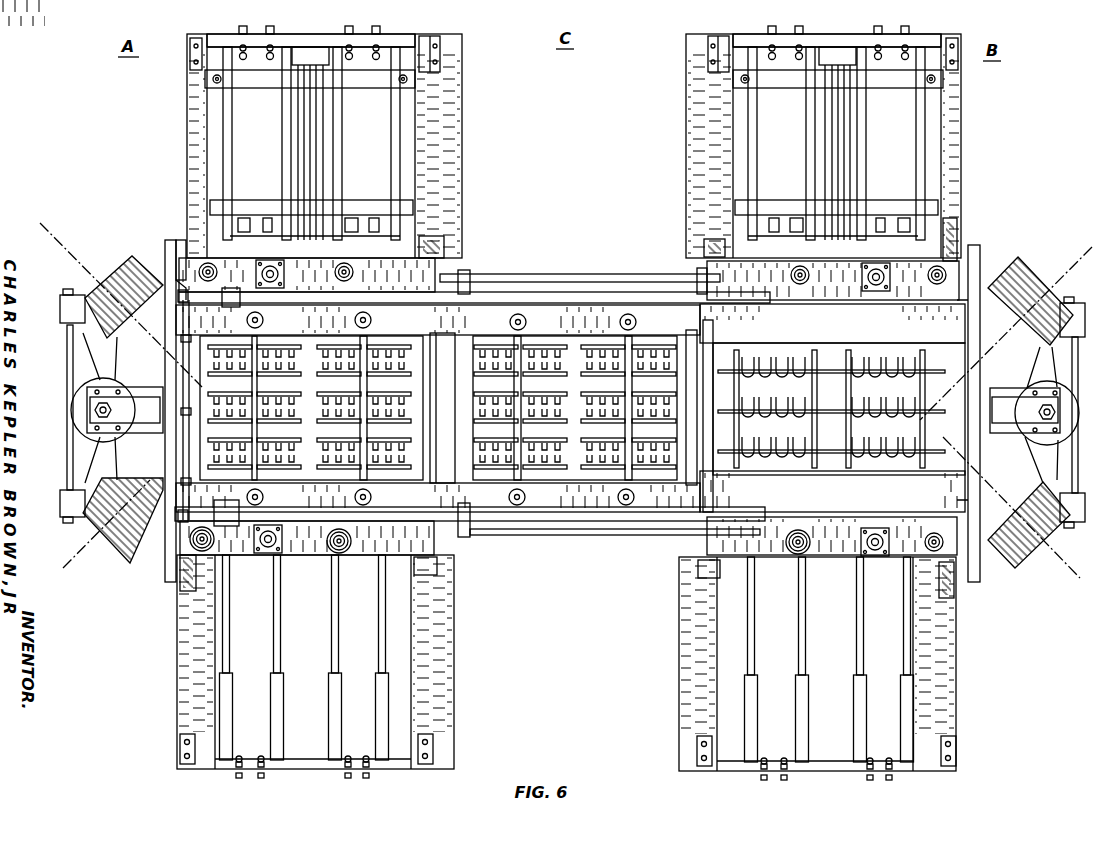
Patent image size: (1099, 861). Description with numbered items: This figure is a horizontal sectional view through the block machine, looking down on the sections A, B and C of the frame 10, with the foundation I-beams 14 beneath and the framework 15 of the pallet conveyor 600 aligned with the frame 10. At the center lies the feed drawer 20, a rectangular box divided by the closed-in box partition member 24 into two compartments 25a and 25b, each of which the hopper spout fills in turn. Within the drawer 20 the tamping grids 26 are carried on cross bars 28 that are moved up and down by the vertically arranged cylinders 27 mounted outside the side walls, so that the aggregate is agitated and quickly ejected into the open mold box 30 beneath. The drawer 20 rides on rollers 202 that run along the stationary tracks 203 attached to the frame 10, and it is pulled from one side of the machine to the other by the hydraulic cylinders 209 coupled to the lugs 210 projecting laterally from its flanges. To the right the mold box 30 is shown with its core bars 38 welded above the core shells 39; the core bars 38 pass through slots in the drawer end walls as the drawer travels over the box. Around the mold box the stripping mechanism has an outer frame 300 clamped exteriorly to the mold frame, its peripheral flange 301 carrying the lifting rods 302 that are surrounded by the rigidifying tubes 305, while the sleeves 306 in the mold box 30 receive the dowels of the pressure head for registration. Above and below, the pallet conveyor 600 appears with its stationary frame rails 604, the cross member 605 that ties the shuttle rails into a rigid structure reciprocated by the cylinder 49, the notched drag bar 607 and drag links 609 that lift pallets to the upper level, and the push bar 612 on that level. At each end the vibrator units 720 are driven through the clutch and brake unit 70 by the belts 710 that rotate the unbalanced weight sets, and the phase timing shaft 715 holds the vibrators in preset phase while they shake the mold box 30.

The frame 10 is at (707, 239).
The I-beams 14 is at (186, 125).
The framework of the pallet conveyor 15 is at (435, 752).
The feed drawer 20 is at (598, 512).
The box partition member 24 is at (449, 342).
The compartment 25a is at (326, 371).
The compartment 25b is at (572, 357).
The tamping grids 26 is at (396, 346).
The cylinders 27 is at (365, 318).
The cross bars 28 is at (519, 360).
The mold box 30 is at (943, 329).
The core bars 38 is at (907, 451).
The core shells 39 is at (877, 462).
The cylinder 49 is at (316, 135).
The clutch and brake unit 70 is at (115, 392).
The rollers 202 is at (130, 262).
The tracks or rails 203 is at (773, 300).
The hydraulic cylinders 209 is at (616, 298).
The lugs 210 is at (187, 352).
The outer frame 300 is at (180, 270).
The peripheral flange 301 is at (246, 268).
The lifting rods 302 is at (352, 264).
The tubes 305 is at (200, 541).
The sleeves 306 is at (285, 274).
The pallet conveyor 600 is at (342, 158).
The frame rails 604 is at (233, 151).
The cross member 605 is at (405, 45).
The notched drag bar 607 is at (236, 205).
The drag links 609 is at (421, 62).
The push bar 612 is at (232, 80).
The belts 710 is at (84, 340).
The phase timing shaft 715 is at (66, 386).
The vibrator units 720 is at (102, 292).